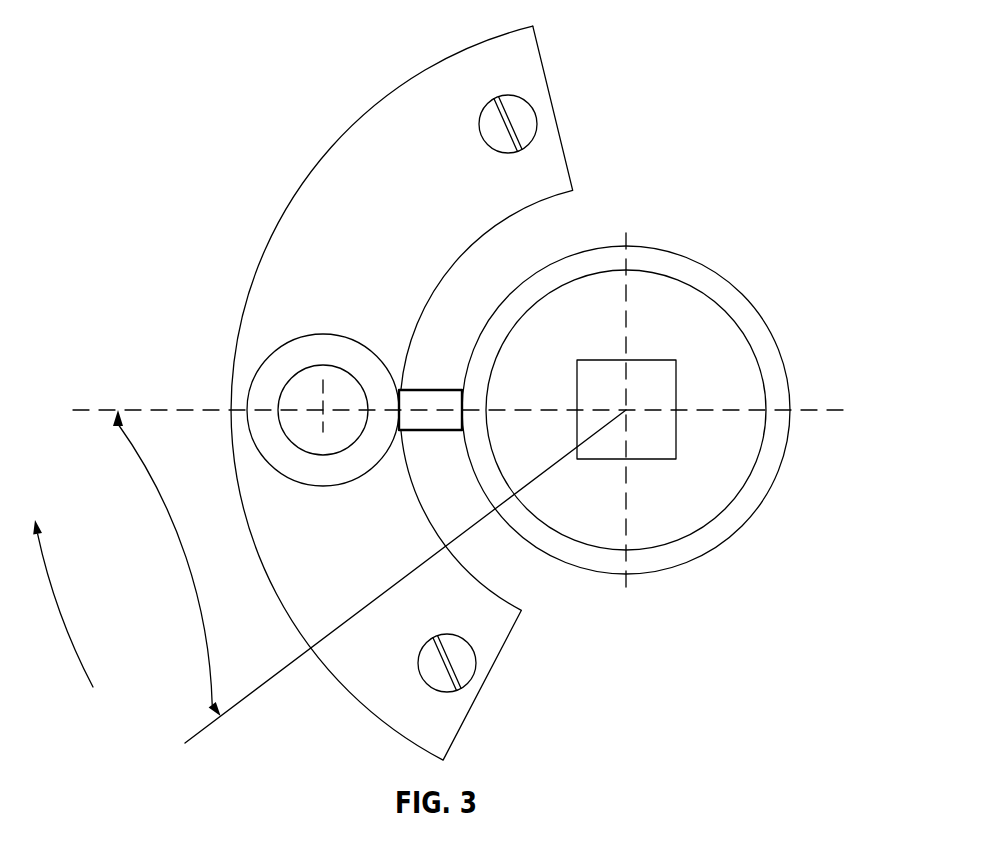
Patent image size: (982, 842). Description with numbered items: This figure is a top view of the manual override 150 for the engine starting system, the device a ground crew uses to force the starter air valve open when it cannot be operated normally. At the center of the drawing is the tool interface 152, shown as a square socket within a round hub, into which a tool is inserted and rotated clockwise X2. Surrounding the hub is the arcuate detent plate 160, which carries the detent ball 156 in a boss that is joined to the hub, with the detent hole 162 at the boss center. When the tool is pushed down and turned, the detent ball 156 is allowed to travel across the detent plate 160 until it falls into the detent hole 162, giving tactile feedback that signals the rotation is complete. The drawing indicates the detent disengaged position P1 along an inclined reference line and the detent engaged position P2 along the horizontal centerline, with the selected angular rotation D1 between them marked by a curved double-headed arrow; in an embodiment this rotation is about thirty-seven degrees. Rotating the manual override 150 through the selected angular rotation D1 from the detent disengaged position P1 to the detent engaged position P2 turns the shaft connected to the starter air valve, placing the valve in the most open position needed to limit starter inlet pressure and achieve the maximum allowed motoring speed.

The manual override 150 is at (174, 78).
The tool interface 152 is at (676, 429).
The detent ball 156 is at (323, 487).
The detent plate 160 is at (497, 627).
The detent hole 162 is at (290, 380).
The detent disengaged position P1 is at (203, 730).
The detent engaged position P2 is at (98, 410).
The selected angular rotation D1 is at (145, 575).
The clockwise rotation X2 is at (55, 603).